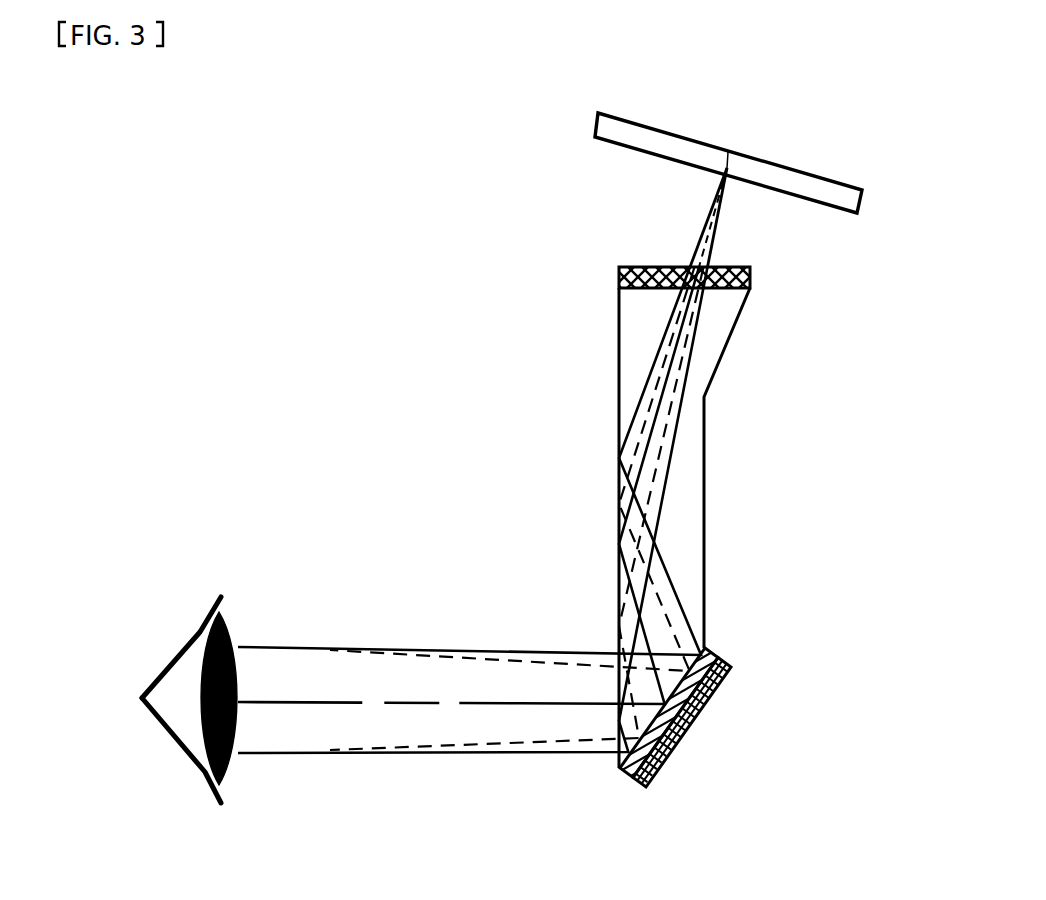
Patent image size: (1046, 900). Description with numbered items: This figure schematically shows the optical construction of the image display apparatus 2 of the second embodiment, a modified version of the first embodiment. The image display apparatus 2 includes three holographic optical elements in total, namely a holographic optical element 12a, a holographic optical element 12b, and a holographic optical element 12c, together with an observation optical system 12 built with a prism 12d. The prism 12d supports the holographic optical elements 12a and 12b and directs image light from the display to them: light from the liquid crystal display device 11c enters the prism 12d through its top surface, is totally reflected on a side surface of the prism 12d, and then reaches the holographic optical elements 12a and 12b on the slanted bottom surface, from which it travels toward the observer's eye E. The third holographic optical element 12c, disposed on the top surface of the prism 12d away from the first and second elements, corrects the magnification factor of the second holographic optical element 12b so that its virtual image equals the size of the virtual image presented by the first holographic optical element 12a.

The image display apparatus 2 is at (574, 837).
The liquid crystal display device 11c is at (628, 120).
The observation optical system 12 is at (838, 243).
The holographic optical element 12a is at (708, 648).
The holographic optical element 12b is at (733, 668).
The holographic optical element 12c is at (737, 266).
The prism 12d is at (705, 479).
The eye of observer E is at (221, 805).